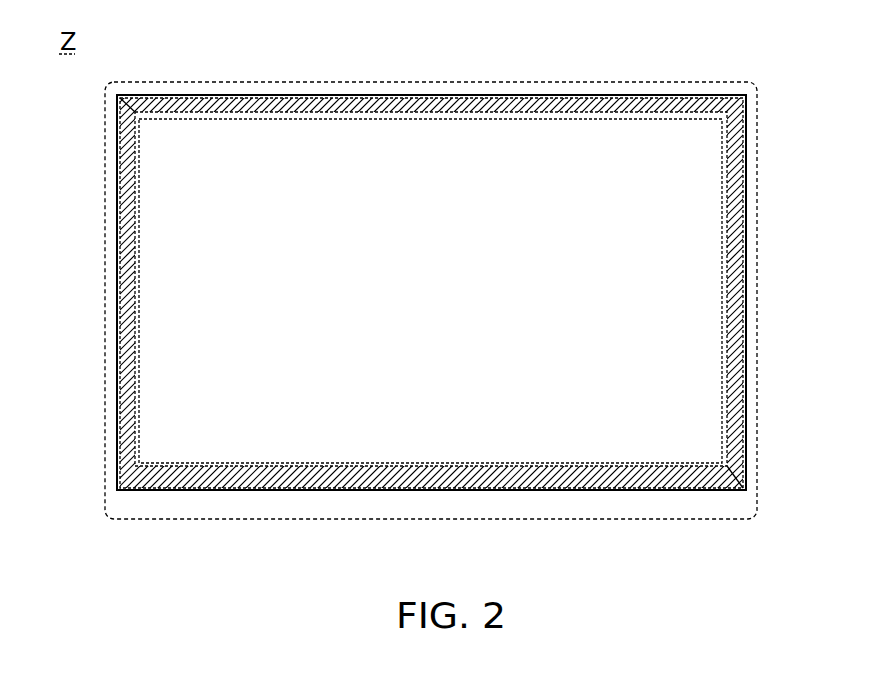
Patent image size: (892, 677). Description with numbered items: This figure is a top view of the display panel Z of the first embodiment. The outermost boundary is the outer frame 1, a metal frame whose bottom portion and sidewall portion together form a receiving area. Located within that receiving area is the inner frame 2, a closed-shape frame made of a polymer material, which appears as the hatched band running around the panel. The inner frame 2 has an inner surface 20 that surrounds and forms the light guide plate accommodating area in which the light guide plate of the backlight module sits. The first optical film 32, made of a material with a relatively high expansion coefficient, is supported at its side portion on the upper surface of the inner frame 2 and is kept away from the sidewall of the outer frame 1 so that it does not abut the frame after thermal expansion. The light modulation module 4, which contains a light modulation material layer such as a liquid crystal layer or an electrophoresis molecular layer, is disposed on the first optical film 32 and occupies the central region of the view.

The outer frame 1 is at (112, 250).
The inner frame 2 is at (744, 333).
The light modulation module 4 is at (494, 143).
The inner surface 20 is at (173, 463).
The first optical film 32 is at (123, 440).